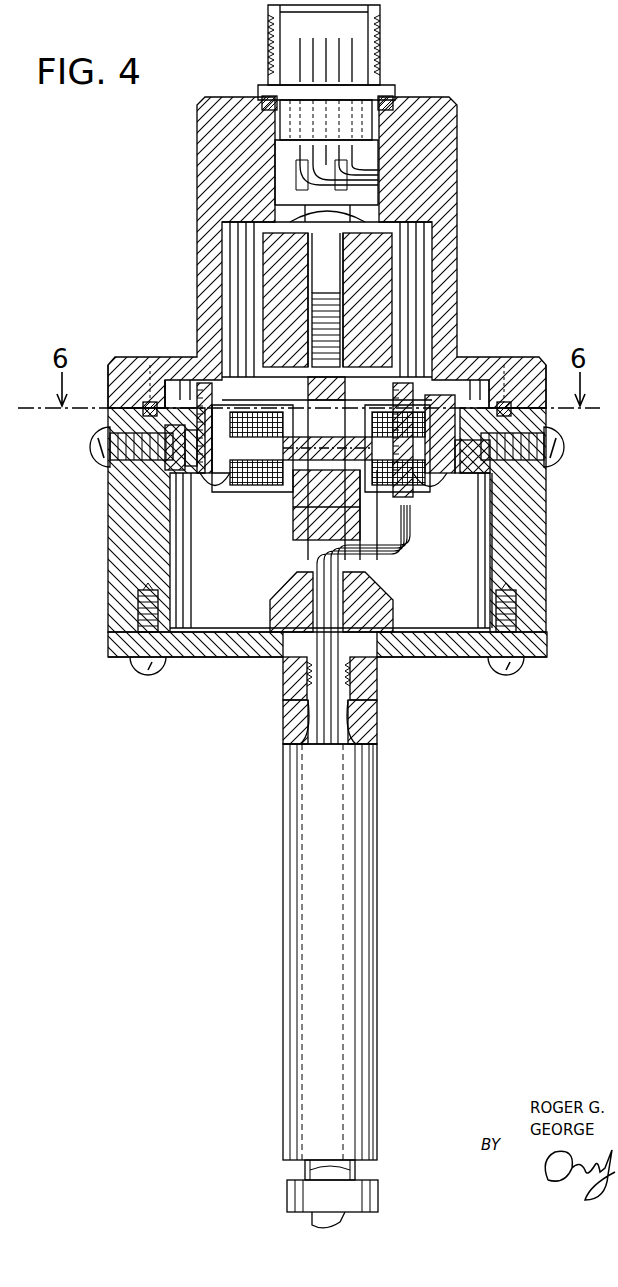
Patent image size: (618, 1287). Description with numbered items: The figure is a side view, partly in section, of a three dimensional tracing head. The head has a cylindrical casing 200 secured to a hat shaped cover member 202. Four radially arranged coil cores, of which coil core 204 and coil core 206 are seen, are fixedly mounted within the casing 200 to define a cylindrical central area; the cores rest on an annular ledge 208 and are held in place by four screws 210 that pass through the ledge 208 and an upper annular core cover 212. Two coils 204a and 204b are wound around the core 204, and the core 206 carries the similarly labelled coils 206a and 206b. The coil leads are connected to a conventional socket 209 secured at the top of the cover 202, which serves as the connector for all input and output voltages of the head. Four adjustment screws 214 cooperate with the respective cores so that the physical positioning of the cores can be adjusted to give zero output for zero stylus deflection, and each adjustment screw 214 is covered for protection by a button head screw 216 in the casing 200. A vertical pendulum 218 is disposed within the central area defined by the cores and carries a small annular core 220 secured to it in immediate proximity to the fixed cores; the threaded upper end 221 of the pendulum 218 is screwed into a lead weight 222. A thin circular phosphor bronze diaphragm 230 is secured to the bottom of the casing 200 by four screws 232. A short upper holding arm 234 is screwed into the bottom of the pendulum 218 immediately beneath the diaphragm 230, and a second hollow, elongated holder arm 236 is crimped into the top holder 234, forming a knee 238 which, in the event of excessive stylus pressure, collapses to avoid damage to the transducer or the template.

The cylindrical casing 200 is at (555, 492).
The hat shaped cover member 202 is at (445, 258).
The coil core 204 is at (314, 468).
The coil 204a is at (300, 418).
The coil 204b is at (246, 474).
The coil core 206 is at (368, 465).
The coil 206a is at (438, 410).
The coil 206b is at (385, 485).
The annular ledge 208 is at (162, 465).
The socket 209 is at (268, 80).
The screw 210 is at (436, 478).
The upper annular core cover 212 is at (403, 403).
The adjustment screw 214 is at (145, 432).
The button head screw 216 is at (92, 436).
The vertical pendulum 218 is at (372, 612).
The annular core 220 is at (440, 372).
The threaded upper end 221 is at (318, 392).
The lead weight 222 is at (278, 303).
The diaphragm 230 is at (425, 640).
The screw 232 is at (160, 672).
The upper holding arm 234 is at (370, 680).
The elongated holder arm 236 is at (370, 825).
The knee 238 is at (370, 740).